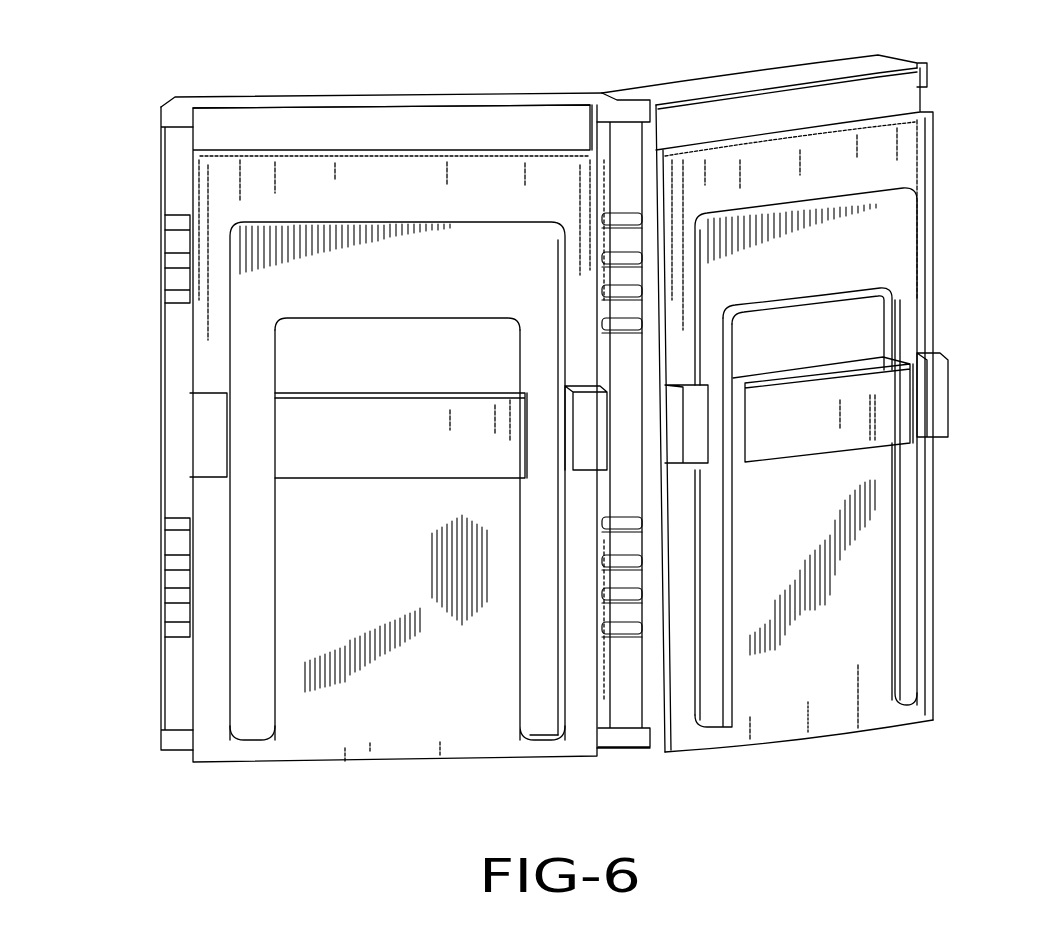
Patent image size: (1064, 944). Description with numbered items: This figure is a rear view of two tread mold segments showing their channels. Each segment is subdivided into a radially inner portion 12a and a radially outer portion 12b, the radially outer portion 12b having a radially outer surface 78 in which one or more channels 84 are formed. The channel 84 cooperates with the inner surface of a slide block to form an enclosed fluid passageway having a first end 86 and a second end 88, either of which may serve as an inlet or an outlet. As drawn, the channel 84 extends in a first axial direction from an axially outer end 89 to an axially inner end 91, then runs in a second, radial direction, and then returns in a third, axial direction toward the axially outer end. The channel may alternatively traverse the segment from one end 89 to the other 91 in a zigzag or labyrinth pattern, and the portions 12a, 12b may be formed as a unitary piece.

The radially inner portion 12a is at (178, 355).
The radially outer portion 12b is at (348, 519).
The radially outer surface 78 is at (882, 393).
The channel 84 is at (452, 256).
The first end 86 is at (560, 703).
The second end 88 is at (247, 700).
The axially outer end 89 is at (392, 707).
The axially inner end 91 is at (362, 135).